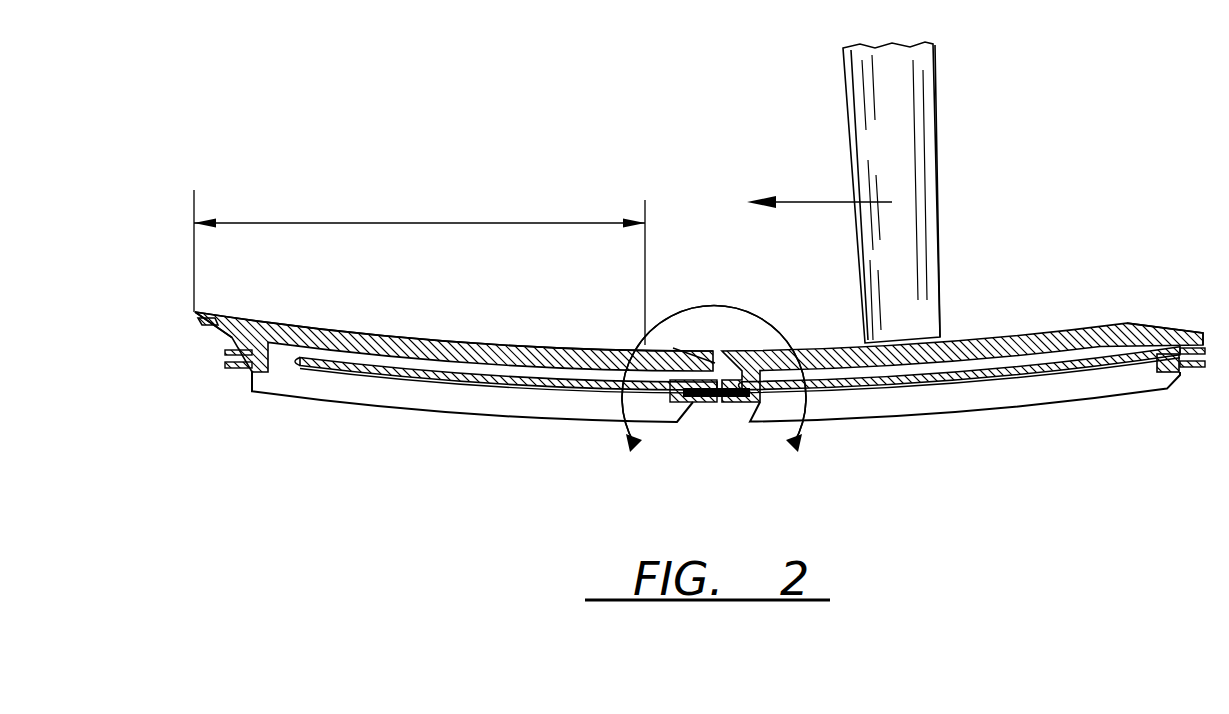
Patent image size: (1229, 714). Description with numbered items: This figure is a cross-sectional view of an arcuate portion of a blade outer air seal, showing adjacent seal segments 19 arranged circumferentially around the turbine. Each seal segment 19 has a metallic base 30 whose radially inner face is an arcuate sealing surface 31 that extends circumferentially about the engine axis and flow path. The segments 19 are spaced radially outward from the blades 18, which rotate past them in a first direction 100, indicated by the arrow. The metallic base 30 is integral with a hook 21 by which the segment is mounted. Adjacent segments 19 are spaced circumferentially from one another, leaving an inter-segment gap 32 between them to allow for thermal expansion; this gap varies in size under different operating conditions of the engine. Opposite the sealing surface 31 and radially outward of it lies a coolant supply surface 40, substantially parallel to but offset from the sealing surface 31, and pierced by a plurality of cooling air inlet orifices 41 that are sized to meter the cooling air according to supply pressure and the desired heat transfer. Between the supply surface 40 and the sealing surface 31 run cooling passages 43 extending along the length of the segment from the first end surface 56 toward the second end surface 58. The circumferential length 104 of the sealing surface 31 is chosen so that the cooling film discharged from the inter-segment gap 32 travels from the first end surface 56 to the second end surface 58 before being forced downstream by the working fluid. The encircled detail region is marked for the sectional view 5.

The blades 18 is at (915, 88).
The first direction 100 is at (824, 197).
The circumferential length 104 is at (388, 217).
The seal segment 19 is at (240, 318).
The arcuate sealing surface 31 is at (360, 314).
The metallic base 30 is at (455, 340).
The first end surface 56 is at (716, 362).
The second end surface 58 is at (214, 345).
The cooling air inlet orifices 41 is at (292, 381).
The coolant supply surface 40 is at (350, 388).
The hook 21 is at (412, 408).
The cooling passages 43 is at (502, 392).
The inter-segment gap 32 is at (710, 400).
The section line 5- 5 is at (714, 392).